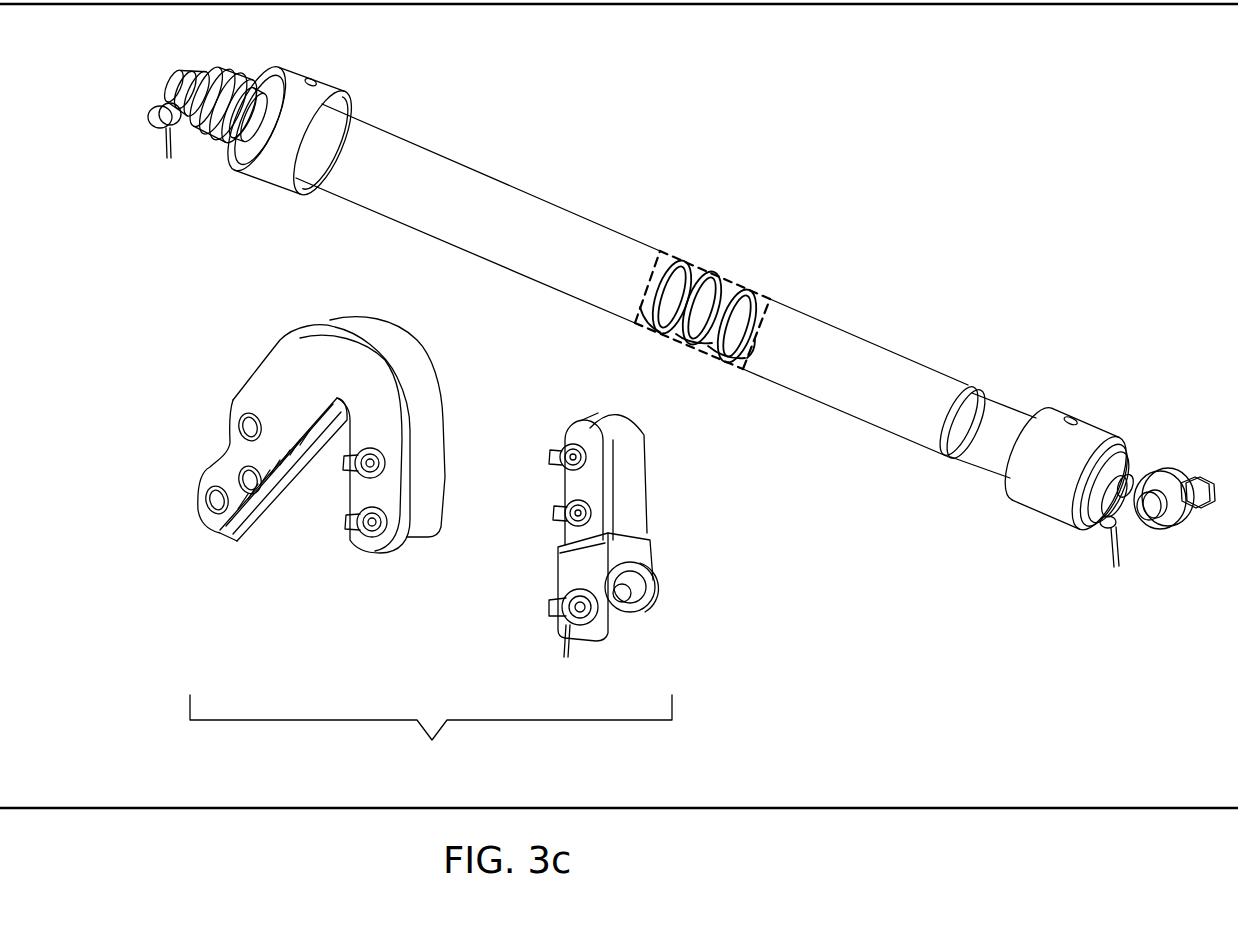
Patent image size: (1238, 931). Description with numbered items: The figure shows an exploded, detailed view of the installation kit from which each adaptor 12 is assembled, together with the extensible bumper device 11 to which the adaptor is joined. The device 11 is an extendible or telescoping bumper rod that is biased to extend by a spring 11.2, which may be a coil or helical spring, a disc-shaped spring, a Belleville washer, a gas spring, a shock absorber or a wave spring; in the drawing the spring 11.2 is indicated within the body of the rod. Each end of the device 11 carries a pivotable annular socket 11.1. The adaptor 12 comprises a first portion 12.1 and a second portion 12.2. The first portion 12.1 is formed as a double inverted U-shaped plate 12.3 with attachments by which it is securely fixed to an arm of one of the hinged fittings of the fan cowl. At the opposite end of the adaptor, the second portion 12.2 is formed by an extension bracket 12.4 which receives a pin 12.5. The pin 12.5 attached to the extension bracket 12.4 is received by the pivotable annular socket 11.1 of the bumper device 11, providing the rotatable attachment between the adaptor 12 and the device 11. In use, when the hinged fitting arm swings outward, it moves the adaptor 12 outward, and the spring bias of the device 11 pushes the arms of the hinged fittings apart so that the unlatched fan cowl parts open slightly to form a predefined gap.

The device 11 is at (563, 233).
The pivotable annular socket 11.1 is at (222, 79).
The spring 11.2 is at (740, 294).
The adaptor 12 is at (431, 739).
The first portion 12.1 is at (186, 414).
The second portion 12.2 is at (703, 552).
The double inverted U-shaped plate 12.3 is at (327, 594).
The extension bracket 12.4 is at (515, 680).
The pin 12.5 is at (652, 632).